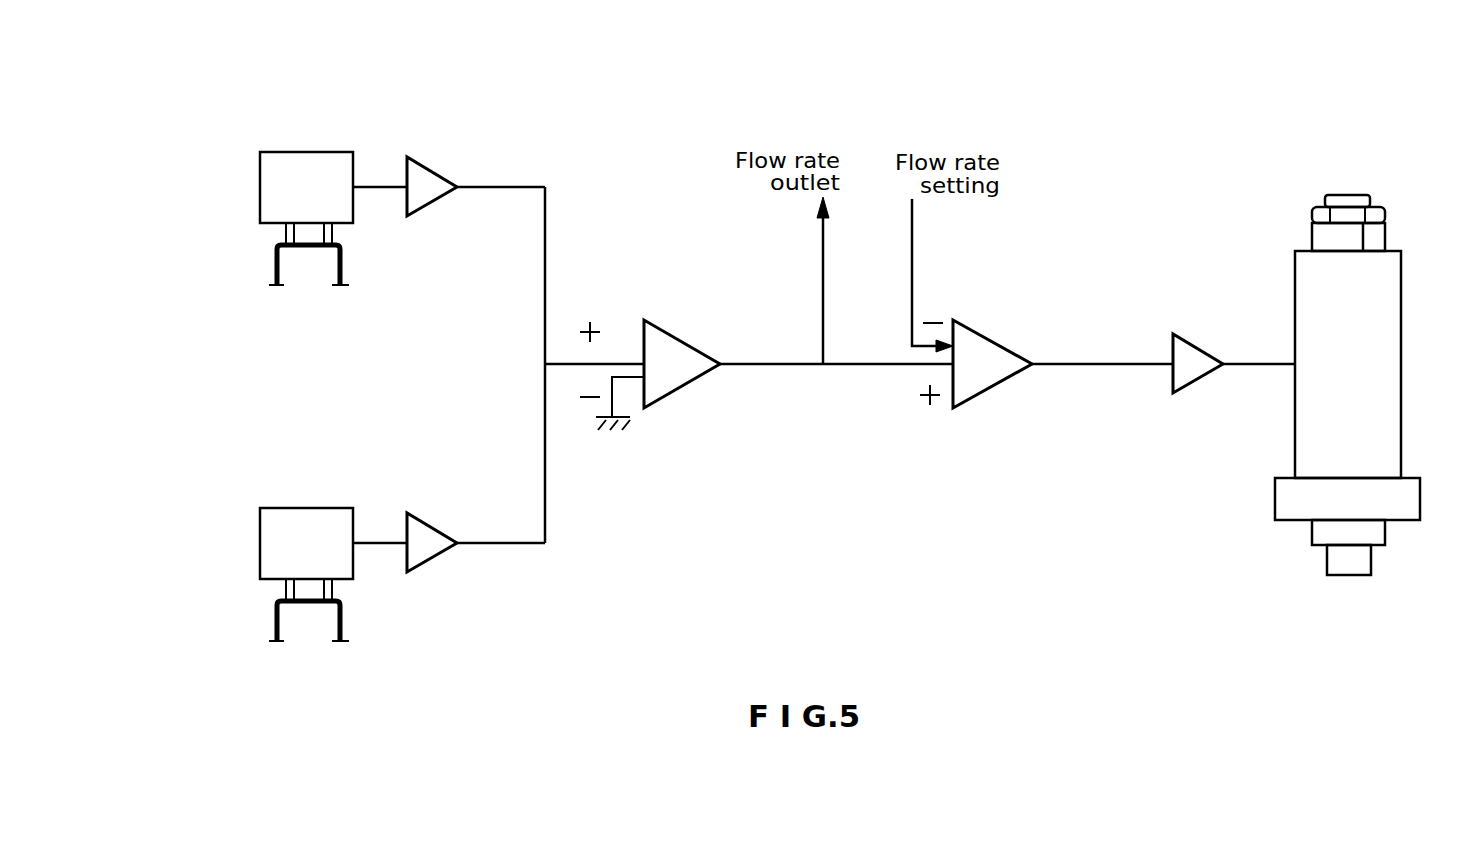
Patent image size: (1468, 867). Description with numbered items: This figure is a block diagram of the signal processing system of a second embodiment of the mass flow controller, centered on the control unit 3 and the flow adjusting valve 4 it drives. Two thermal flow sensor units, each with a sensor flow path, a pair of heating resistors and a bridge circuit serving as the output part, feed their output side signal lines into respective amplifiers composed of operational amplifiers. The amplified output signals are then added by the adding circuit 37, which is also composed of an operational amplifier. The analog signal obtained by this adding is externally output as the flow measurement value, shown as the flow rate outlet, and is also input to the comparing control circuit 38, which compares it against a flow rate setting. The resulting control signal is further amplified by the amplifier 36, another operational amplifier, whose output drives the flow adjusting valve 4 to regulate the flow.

The control unit 3 is at (1061, 121).
The flow adjusting valve 4 is at (1372, 332).
The amplifier 36 is at (1190, 343).
The adding circuit 37 is at (663, 337).
The comparing control circuit 38 is at (988, 338).